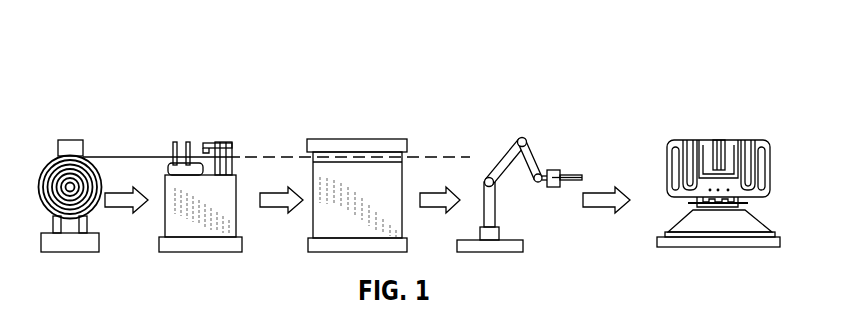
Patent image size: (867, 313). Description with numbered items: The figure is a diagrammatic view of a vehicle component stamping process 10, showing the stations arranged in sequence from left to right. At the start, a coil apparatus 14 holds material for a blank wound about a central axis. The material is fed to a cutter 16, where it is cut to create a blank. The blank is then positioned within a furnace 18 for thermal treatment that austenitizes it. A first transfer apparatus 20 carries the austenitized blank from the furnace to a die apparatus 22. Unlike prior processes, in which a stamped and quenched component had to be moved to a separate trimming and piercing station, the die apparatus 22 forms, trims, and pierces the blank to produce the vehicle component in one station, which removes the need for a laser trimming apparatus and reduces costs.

The stamping process 10 is at (611, 48).
The coil apparatus 14 is at (70, 140).
The cutter 16 is at (220, 143).
The furnace 18 is at (363, 140).
The first transfer apparatus 20 is at (522, 140).
The die apparatus 22 is at (718, 140).